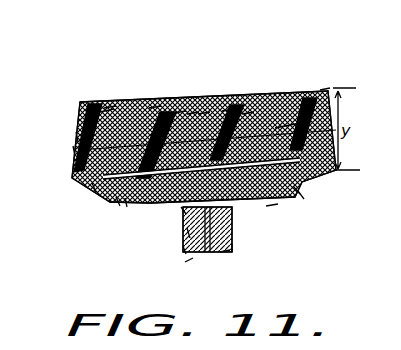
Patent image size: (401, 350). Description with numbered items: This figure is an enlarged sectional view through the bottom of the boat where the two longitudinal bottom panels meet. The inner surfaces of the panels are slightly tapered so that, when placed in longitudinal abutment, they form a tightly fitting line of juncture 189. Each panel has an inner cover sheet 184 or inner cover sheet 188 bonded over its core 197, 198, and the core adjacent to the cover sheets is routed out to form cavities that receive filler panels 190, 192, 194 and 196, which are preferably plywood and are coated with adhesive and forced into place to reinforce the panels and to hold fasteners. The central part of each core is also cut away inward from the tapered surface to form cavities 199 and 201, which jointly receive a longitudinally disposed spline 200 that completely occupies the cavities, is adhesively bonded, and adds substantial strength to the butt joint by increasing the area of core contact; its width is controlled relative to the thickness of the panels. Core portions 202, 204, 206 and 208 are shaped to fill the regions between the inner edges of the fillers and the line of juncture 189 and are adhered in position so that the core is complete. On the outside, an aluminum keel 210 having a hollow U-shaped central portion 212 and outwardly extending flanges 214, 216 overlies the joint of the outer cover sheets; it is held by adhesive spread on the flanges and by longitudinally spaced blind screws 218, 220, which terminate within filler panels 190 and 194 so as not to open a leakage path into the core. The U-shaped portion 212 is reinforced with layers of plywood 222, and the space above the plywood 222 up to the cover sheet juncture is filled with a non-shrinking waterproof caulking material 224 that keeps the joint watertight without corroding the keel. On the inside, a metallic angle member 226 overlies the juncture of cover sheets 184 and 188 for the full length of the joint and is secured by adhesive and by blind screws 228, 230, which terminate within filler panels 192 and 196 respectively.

The inner cover sheet 184 is at (297, 100).
The inner cover sheet 188 is at (110, 108).
The line of juncture 189 is at (187, 233).
The filler panel 190 is at (92, 188).
The filler panel 192 is at (107, 110).
The filler panel 194 is at (295, 190).
The filler panel 196 is at (307, 110).
The core 197 is at (76, 137).
The core 198 is at (325, 88).
The cavity 199 is at (73, 150).
The spline 200 is at (193, 113).
The cavity 201 is at (285, 133).
The core portion 202 is at (181, 212).
The core portion 204 is at (204, 113).
The core portion 206 is at (235, 212).
The core portion 208 is at (228, 110).
The keel 210 is at (243, 251).
The hollow U-shaped central portion 212 is at (188, 264).
The flange 214 is at (300, 195).
The flange 216 is at (116, 202).
The blind screw 218 is at (125, 222).
The blind screw 220 is at (283, 221).
The plywood 222 is at (183, 251).
The caulking material 224 is at (225, 252).
The metallic angle member 226 is at (180, 112).
The blind screw 228 is at (155, 107).
The blind screw 230 is at (248, 113).